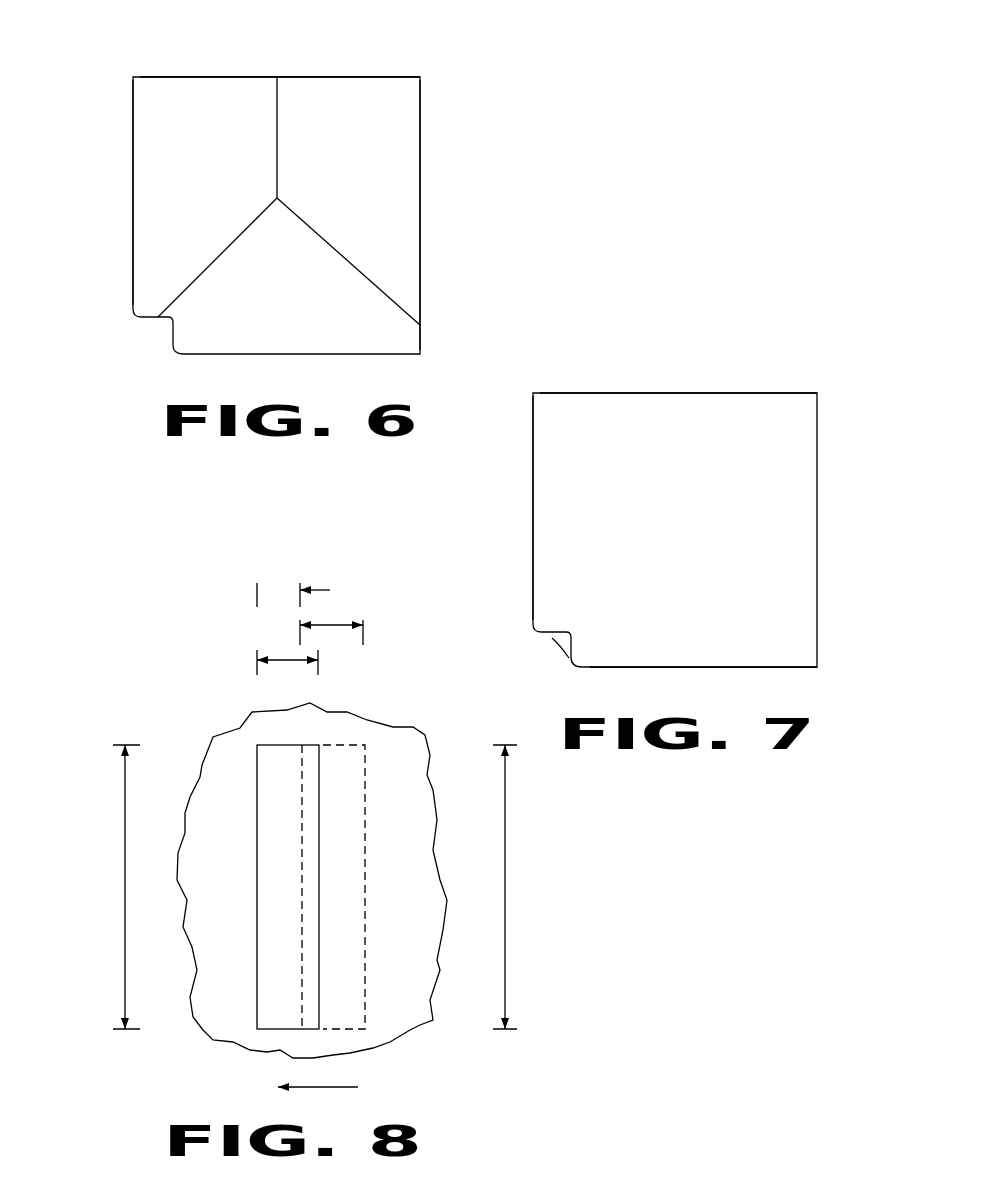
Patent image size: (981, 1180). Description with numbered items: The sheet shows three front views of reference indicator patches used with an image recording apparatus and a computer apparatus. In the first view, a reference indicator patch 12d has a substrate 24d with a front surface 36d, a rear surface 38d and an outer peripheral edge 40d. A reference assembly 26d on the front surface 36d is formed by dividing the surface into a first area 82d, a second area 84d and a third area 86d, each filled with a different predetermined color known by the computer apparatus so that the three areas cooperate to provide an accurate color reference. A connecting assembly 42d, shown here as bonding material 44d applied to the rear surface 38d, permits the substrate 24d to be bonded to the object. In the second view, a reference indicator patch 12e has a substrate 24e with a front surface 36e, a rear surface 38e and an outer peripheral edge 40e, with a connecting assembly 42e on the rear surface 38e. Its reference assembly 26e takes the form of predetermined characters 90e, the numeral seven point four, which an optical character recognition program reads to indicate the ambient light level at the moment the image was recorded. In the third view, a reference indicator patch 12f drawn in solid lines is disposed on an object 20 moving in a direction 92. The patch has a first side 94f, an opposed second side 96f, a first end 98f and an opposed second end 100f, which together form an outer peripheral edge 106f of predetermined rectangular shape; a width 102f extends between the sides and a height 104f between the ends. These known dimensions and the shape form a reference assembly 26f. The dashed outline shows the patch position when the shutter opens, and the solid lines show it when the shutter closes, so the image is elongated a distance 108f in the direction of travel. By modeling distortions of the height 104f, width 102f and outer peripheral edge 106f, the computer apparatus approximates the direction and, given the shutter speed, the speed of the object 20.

In FIG. 6, the reference indicator patch 12d is at (505, 130).
In FIG. 6, the substrate 24d is at (133, 198).
In FIG. 6, the reference assembly 26d is at (400, 268).
In FIG. 6, the front surface 36d is at (397, 333).
In FIG. 6, the rear surface 38d is at (166, 322).
In FIG. 6, the outer peripheral edge 40d is at (373, 72).
In FIG. 6, the connecting assembly 42d is at (140, 325).
In FIG. 6, the bonding material 44d is at (163, 332).
In FIG. 6, the first area 82d is at (188, 87).
In FIG. 6, the second area 84d is at (403, 108).
In FIG. 6, the third area 86d is at (372, 354).
In FIG. 7, the reference indicator patch 12e is at (820, 422).
In FIG. 7, the substrate 24e is at (532, 507).
In FIG. 7, the reference assembly 26e is at (797, 400).
In FIG. 7, the front surface 36e is at (793, 612).
In FIG. 7, the rear surface 38e is at (553, 640).
In FIG. 7, the outer peripheral edge 40e is at (742, 672).
In FIG. 7, the connecting assembly 42e is at (552, 647).
In FIG. 7, the predetermined characters 90e is at (752, 413).
In FIG. 8, the object 20 is at (208, 737).
In FIG. 8, the reference indicator patch 12f is at (283, 745).
In FIG. 8, the reference assembly 26f is at (258, 818).
In FIG. 8, the direction 92 is at (327, 1087).
In FIG. 8, the first side 94f is at (302, 855).
In FIG. 8, the second side 96f is at (319, 810).
In FIG. 8, the first end 98f is at (260, 745).
In FIG. 8, the second end 100f is at (282, 1029).
In FIG. 8, the width 102f is at (333, 625).
In FIG. 8, the height 104f is at (124, 905).
In FIG. 8, the outer peripheral edge 106f is at (257, 773).
In FIG. 8, the distance 108f is at (255, 590).